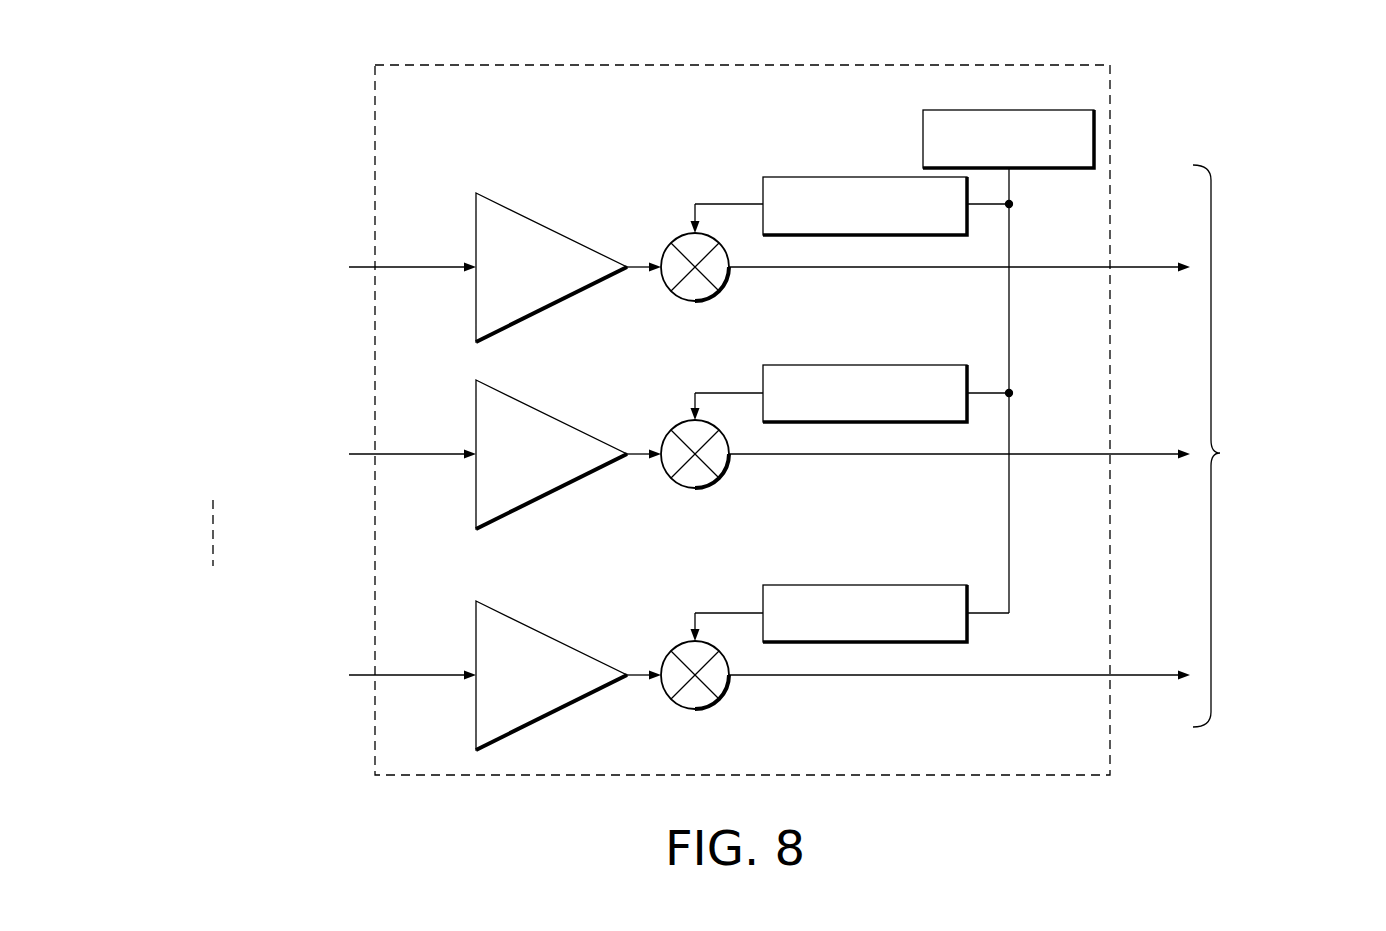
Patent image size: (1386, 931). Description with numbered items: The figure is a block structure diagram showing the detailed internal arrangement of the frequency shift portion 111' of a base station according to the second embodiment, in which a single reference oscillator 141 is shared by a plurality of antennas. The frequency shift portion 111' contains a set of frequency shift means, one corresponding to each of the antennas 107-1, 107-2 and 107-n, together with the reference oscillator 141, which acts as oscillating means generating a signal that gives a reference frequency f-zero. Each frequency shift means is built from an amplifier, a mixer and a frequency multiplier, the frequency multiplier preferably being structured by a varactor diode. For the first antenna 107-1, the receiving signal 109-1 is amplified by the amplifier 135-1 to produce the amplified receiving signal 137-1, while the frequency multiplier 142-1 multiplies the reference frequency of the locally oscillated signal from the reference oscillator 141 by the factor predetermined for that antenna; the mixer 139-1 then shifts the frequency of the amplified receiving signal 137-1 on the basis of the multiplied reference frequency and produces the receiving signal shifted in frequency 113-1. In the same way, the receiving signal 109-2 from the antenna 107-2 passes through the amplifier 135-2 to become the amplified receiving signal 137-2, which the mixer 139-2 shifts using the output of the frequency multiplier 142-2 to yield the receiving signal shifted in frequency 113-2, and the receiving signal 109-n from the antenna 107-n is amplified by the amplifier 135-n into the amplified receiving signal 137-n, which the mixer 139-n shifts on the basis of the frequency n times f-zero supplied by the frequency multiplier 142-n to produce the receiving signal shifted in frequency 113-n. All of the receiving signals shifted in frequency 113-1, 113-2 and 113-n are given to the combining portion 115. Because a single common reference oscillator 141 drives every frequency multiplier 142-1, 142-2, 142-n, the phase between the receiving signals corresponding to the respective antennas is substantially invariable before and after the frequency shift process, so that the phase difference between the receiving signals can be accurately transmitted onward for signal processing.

The frequency shift portion 111' is at (742, 390).
The receiving signal 109-1 is at (419, 265).
The amplifier 135-1 is at (535, 222).
The amplified receiving signal 137-1 is at (634, 263).
The mixer 139-1 is at (675, 240).
The frequency multiplier 142-1 is at (790, 176).
The receiving signal shifted in frequency 113-1 is at (1062, 266).
The antenna 107-1 is at (212, 266).
The receiving signal 109-2 is at (419, 452).
The amplifier 135-2 is at (474, 416).
The amplified receiving signal 137-2 is at (640, 450).
The mixer 139-2 is at (680, 415).
The frequency multiplier 142-2 is at (865, 364).
The receiving signal shifted in frequency 113-2 is at (1064, 452).
The antenna 107-2 is at (212, 453).
The receiving signal 109-n is at (417, 673).
The amplifier 135-n is at (474, 612).
The amplified receiving signal 137-n is at (639, 670).
The mixer 139-n is at (680, 637).
The frequency multiplier 142-n is at (865, 584).
The receiving signal shifted in frequency 113-n is at (1064, 674).
The antenna 107-n is at (212, 674).
The reference oscillator 141 is at (923, 144).
The combining portion 115 is at (1289, 446).